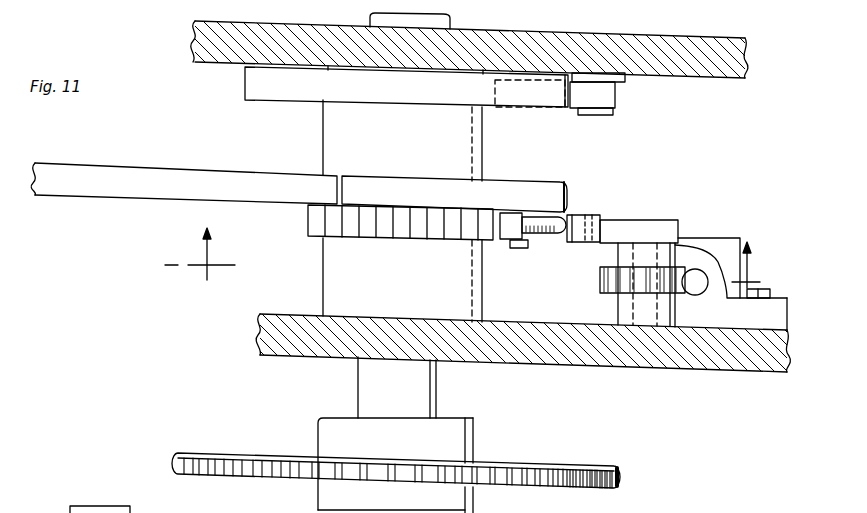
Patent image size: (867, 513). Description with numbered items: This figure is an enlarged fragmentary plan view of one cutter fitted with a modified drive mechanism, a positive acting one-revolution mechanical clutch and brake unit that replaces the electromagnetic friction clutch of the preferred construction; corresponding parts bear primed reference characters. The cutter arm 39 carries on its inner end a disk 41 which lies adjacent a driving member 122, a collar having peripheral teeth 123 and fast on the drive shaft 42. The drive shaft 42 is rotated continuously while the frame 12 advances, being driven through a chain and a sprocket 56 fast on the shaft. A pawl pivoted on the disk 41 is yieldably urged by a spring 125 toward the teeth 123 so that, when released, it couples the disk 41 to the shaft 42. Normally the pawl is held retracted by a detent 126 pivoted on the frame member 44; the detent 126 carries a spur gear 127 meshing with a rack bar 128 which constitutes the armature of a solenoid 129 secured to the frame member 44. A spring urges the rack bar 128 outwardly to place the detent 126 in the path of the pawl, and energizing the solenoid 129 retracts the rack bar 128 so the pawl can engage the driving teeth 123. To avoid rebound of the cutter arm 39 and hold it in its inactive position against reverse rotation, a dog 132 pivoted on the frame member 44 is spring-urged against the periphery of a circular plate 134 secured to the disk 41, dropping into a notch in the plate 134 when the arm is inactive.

The frame member 44 is at (217, 61).
The cutter arm 39 is at (110, 168).
The disk 41 is at (543, 183).
The drive shaft 42 is at (432, 387).
The sprocket 56 is at (583, 466).
The driving member 122 is at (400, 238).
The peripheral teeth 123 is at (445, 231).
The spring 125 is at (543, 234).
The detent 126 is at (645, 227).
The spur gear 127 is at (602, 283).
The rack bar 128 is at (698, 294).
The solenoid 129 is at (728, 238).
The dog 132 is at (608, 98).
The circular plate 134 is at (491, 103).
The frame 12 is at (469, 265).